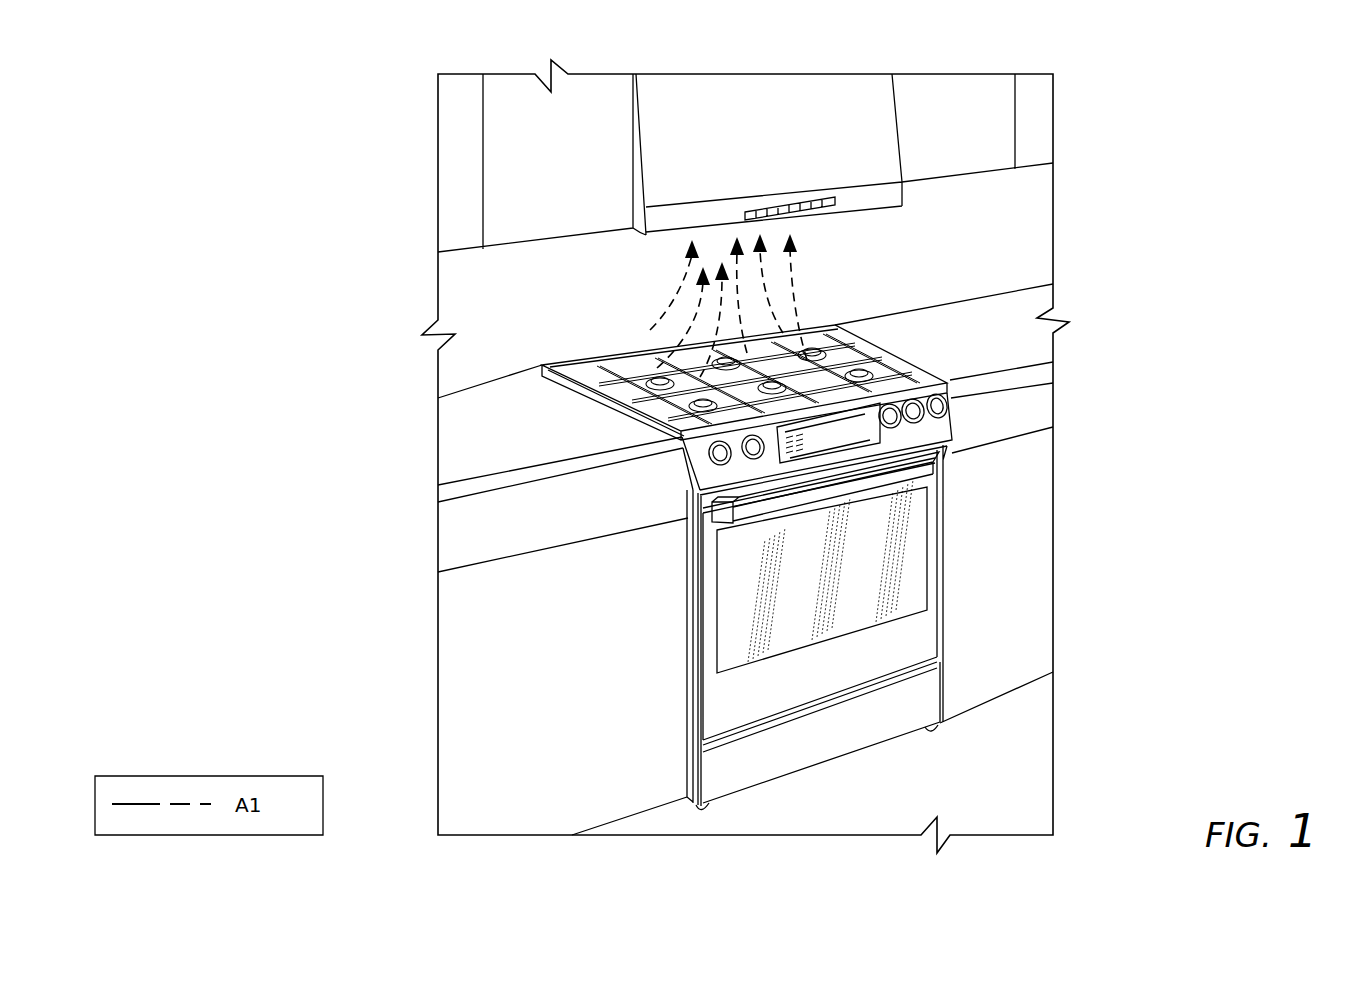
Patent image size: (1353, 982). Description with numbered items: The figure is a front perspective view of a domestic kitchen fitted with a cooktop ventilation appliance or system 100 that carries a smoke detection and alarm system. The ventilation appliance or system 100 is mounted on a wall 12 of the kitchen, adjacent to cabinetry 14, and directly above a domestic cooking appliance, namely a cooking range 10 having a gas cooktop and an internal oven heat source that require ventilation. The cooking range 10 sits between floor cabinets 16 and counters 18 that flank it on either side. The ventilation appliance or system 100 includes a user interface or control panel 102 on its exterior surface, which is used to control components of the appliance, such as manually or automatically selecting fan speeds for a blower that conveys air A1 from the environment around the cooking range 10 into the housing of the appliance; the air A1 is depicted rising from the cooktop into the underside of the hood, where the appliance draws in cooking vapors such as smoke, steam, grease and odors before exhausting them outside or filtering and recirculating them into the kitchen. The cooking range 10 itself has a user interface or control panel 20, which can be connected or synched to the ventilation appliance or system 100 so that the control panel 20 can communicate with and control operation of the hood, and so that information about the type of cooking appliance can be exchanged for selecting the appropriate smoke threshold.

The cooking range 10 is at (780, 567).
The wall 12 is at (1028, 222).
The cabinetry 14 is at (515, 92).
The floor cabinets 16 is at (1028, 540).
The counters 18 is at (468, 443).
The control panel 20 is at (950, 418).
The ventilation appliance or system 100 is at (830, 95).
The control panel 102 is at (775, 195).
The air A1 is at (815, 282).